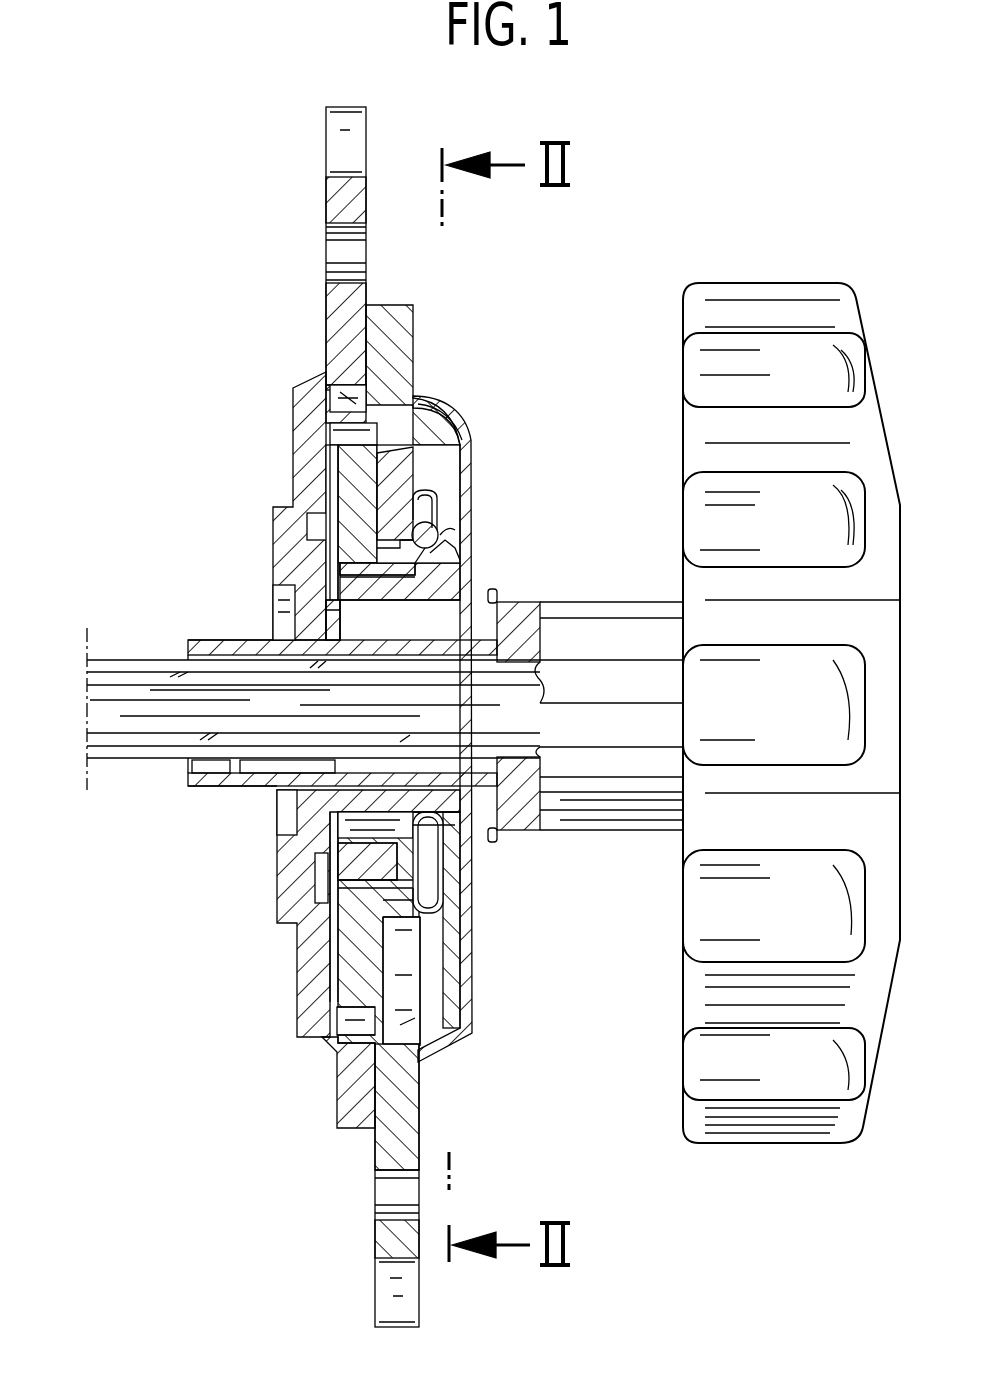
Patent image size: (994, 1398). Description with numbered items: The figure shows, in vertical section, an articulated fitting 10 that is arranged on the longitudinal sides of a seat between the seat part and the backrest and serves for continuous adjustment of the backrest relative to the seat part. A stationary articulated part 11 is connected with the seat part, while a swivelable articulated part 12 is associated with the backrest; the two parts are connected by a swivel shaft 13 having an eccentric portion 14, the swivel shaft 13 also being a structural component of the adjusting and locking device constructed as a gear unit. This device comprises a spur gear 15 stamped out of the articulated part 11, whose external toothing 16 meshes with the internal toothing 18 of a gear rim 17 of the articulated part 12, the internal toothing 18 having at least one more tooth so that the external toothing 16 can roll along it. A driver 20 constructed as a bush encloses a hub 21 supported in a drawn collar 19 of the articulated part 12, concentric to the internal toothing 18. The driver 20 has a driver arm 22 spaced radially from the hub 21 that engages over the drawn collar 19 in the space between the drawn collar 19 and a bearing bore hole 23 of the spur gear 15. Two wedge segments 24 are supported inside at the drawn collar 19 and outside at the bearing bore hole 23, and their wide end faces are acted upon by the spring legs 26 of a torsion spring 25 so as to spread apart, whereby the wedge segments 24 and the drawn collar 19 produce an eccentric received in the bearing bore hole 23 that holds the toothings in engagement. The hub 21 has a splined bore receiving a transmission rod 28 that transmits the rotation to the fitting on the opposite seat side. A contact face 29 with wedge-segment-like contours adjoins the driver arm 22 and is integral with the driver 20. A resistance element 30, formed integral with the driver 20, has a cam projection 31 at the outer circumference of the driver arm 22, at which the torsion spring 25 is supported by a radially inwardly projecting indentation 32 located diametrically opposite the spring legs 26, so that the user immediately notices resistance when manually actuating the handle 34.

The articulated fitting 10 is at (556, 278).
The stationary articulated part 11 is at (392, 1245).
The swivelable articulated part 12 is at (338, 207).
The swivel shaft 13 is at (168, 627).
The eccentric portion 14 is at (328, 905).
The spur gear 15 is at (357, 475).
The external toothing 16 is at (355, 440).
The gear rim 17 is at (345, 1090).
The internal toothing 18 is at (330, 386).
The drawn collar 19 is at (328, 622).
The driver 20 is at (500, 596).
The hub 21 is at (232, 778).
The driver arm 22 is at (350, 625).
The bearing bore hole 23 is at (366, 880).
The wedge segments 24 is at (383, 870).
The torsion spring 25 is at (410, 492).
The spring legs 26 is at (338, 812).
The transmission rod 28 is at (152, 720).
The contact face 29 is at (466, 833).
The resistance element 30 is at (430, 526).
The cam projection 31 is at (418, 560).
The indentation 32 is at (466, 426).
The handle 34 is at (752, 312).